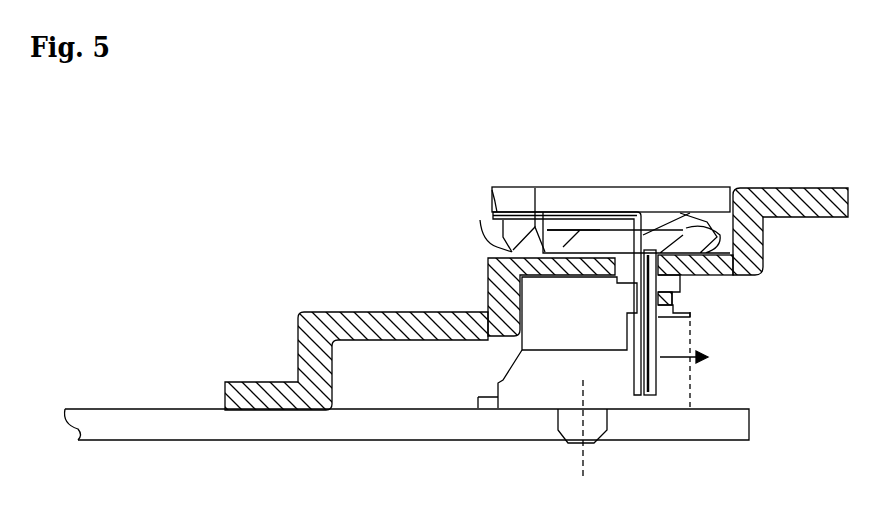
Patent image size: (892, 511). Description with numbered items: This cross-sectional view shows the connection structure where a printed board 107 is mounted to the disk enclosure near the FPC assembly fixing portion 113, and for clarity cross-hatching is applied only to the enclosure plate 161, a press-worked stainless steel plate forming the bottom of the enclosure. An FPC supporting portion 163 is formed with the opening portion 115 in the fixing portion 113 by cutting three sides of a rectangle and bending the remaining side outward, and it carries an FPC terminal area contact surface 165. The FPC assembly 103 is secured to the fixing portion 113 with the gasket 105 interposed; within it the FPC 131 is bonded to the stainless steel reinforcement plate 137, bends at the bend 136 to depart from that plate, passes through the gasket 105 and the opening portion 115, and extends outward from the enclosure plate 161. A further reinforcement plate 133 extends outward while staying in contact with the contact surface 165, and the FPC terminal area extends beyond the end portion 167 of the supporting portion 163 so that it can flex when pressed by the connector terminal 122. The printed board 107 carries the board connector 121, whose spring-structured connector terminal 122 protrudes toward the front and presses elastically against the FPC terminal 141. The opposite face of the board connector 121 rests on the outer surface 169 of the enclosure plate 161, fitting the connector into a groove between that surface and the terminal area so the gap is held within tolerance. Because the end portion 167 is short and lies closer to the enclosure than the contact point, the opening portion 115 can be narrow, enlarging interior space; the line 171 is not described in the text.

The FPC assembly 103 is at (650, 172).
The gasket 105 is at (512, 252).
The printed board 107 is at (482, 434).
The FPC assembly fixing portion 113 is at (535, 188).
The opening portion 115 is at (690, 213).
The board connector 121 is at (592, 327).
The connector terminal 122 is at (643, 320).
The FPC 131 is at (495, 205).
The reinforcement plate 133 is at (652, 362).
The bend 136 is at (621, 259).
The reinforcement plate 137 is at (550, 188).
The FPC terminal 141 is at (638, 382).
The enclosure plate 161 is at (300, 312).
The FPC supporting portion 163 is at (683, 295).
The FPC terminal area contact surface 165 is at (677, 282).
The end portion 167 is at (660, 312).
The outer surface 169 is at (490, 258).
The groove line 171 is at (552, 280).